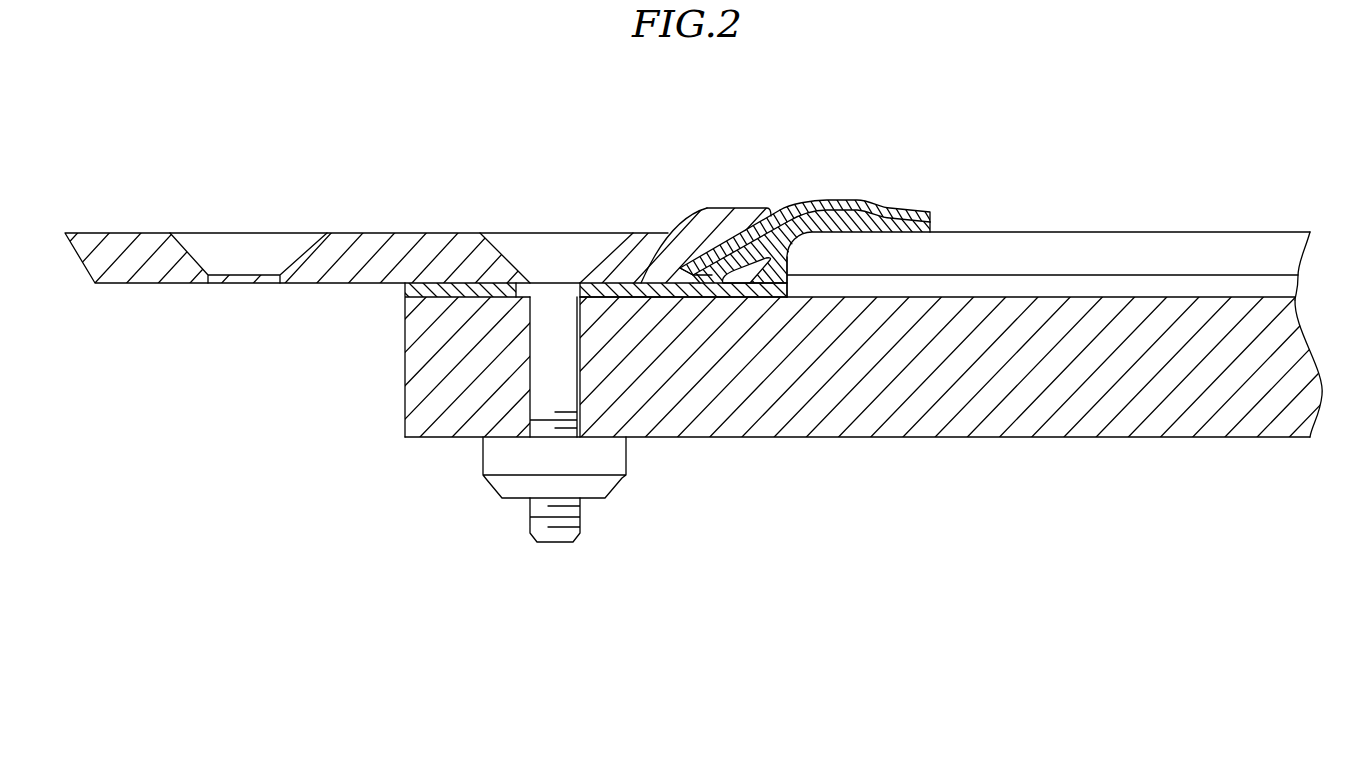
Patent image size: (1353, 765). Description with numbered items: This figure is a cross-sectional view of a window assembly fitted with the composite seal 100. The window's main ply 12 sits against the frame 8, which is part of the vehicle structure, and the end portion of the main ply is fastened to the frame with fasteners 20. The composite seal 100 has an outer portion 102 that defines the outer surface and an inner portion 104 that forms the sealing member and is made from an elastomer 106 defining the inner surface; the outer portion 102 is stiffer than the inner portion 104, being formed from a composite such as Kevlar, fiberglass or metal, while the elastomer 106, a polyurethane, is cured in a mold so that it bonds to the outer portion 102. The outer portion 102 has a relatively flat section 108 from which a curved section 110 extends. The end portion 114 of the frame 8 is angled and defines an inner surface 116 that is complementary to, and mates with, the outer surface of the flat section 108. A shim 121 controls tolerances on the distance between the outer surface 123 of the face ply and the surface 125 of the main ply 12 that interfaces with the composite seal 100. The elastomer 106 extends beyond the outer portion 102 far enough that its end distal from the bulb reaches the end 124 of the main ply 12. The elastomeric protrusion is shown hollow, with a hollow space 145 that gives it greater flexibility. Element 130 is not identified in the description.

The frame 8 is at (107, 262).
The main ply 12 is at (1240, 381).
The fasteners 20 is at (555, 366).
The composite seal 100 is at (882, 184).
The outer portion 102 is at (890, 210).
The inner portion 104 is at (930, 225).
The elastomer 106 is at (795, 212).
The relatively flat section 108 is at (753, 297).
The curved section 110 is at (820, 198).
The end portion 114 is at (658, 248).
The inner surface 116 is at (712, 252).
The shim 121 is at (648, 297).
The outer surface 123 is at (1140, 232).
The end 124 is at (403, 367).
The surface 125 is at (752, 280).
The bolt and nut 130 is at (528, 409).
The hollow space 145 is at (777, 262).